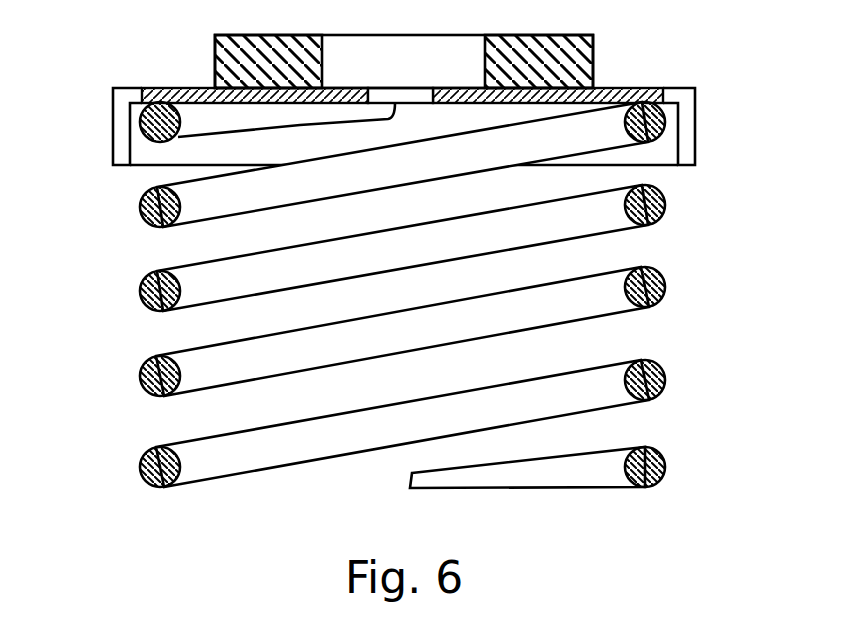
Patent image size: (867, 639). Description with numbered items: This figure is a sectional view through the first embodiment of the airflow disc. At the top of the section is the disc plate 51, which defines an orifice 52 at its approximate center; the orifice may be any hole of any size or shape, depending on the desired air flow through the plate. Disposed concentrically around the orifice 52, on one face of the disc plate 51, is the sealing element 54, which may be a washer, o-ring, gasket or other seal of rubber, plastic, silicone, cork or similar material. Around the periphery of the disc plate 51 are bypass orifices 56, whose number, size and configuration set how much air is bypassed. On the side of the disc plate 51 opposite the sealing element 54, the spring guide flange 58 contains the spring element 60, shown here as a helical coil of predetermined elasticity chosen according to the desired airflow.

The disc plate 51 is at (642, 86).
The orifice 52 is at (384, 97).
The sealing element 54 is at (557, 35).
The bypass orifices 56 is at (123, 120).
The spring guide flange 58 is at (665, 165).
The spring element 60 is at (657, 275).